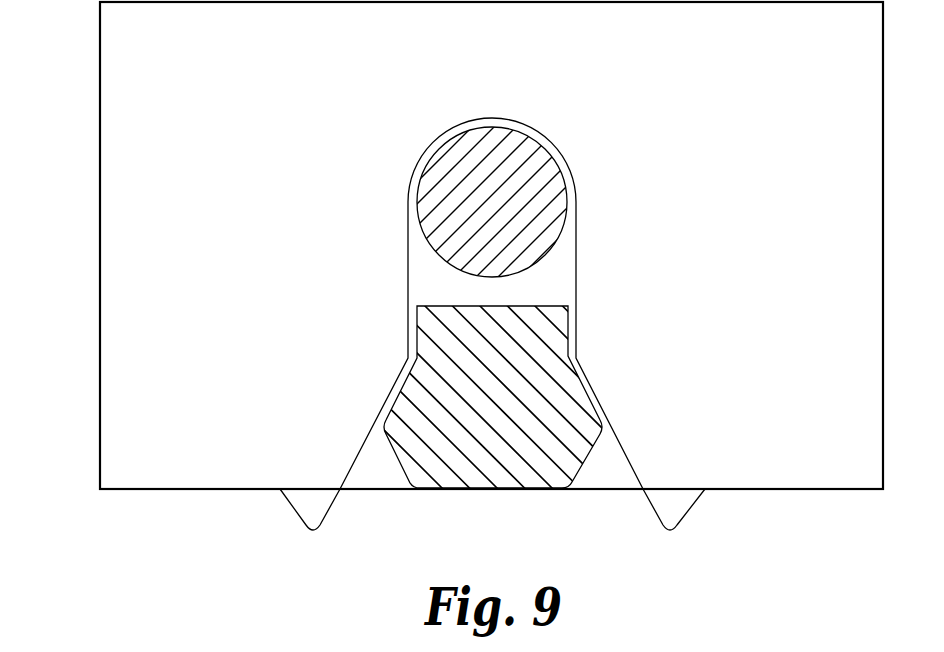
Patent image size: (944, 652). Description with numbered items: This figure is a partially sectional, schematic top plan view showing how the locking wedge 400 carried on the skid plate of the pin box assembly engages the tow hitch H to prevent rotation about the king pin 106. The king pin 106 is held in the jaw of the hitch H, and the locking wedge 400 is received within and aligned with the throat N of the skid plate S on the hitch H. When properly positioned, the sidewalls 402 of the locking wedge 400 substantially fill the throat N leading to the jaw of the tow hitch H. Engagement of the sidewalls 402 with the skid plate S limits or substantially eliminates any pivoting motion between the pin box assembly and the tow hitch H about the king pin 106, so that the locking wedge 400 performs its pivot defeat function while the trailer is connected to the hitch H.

The king pin 106 is at (492, 182).
The locking wedge 400 is at (442, 489).
The sidewalls 402 is at (395, 396).
The tow hitch H is at (115, 507).
The skid plate S is at (740, 440).
The throat N is at (564, 510).